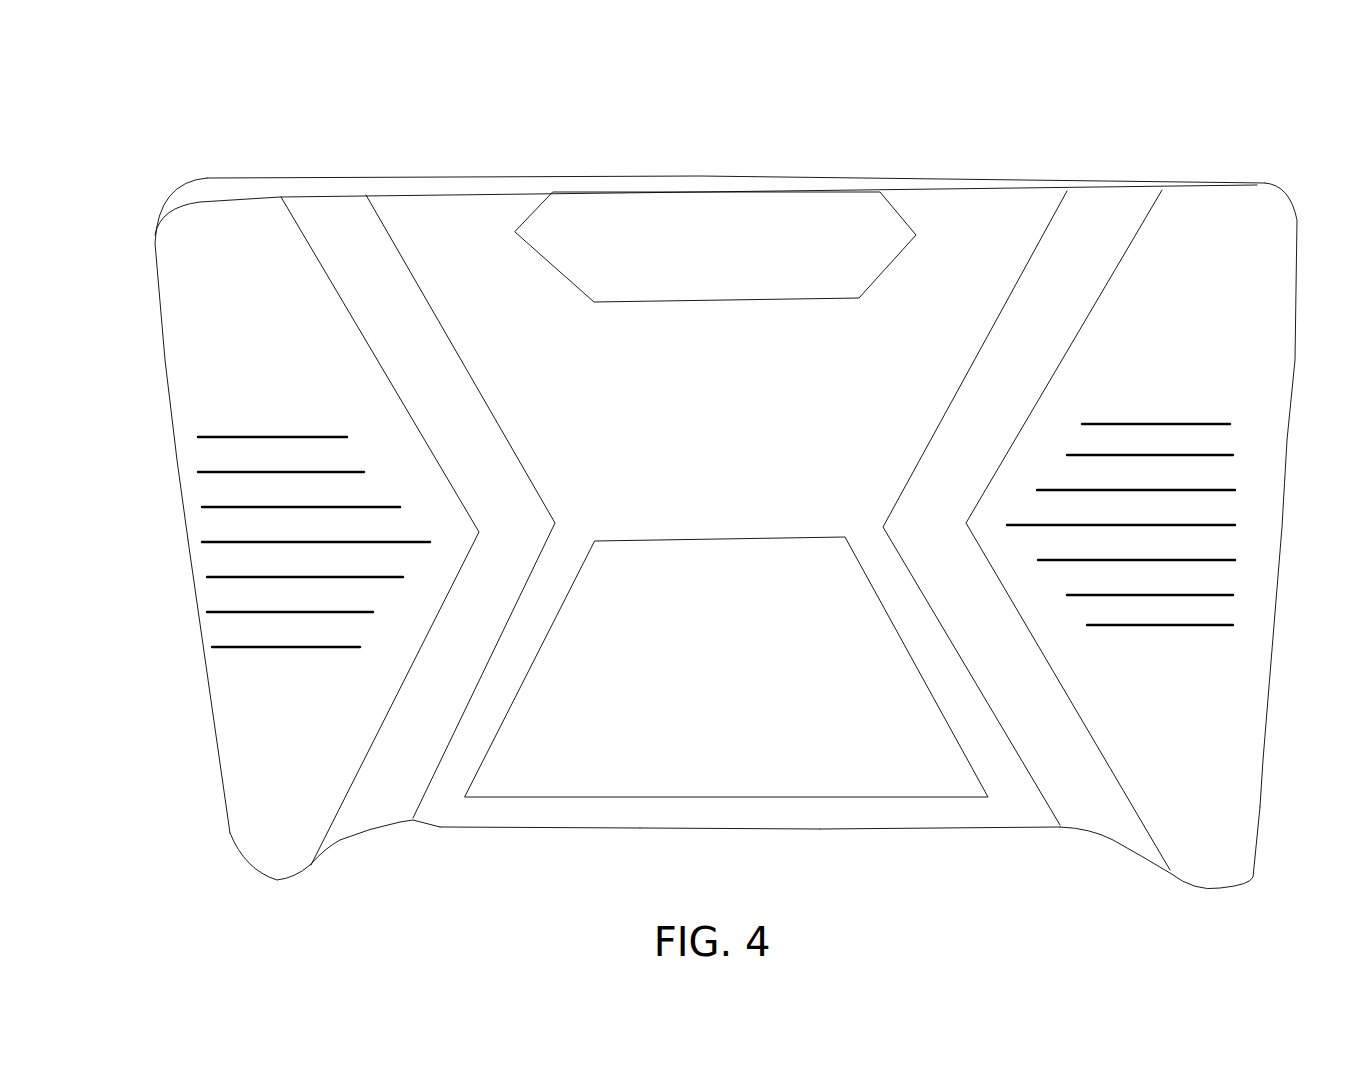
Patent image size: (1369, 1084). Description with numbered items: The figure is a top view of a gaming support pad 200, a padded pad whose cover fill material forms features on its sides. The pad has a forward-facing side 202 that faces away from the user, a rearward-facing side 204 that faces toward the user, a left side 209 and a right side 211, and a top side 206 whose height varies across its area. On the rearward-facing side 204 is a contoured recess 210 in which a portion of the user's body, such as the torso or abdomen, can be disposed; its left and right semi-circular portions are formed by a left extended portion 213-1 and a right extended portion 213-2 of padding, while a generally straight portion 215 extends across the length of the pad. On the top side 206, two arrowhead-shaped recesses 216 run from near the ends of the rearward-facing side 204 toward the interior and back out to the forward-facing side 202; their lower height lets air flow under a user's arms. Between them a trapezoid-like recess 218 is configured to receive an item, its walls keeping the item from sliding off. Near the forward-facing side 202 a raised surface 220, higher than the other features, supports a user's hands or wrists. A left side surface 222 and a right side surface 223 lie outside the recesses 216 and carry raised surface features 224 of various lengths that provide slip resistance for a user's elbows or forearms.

The gaming support pad 200 is at (1255, 88).
The forward-facing side 202 is at (333, 137).
The rearward-facing side 204 is at (889, 893).
The top side 206 is at (153, 265).
The left side 209 is at (113, 526).
The recess 210 is at (560, 881).
The right side 211 is at (1300, 537).
The left extended portion 213-1 is at (320, 886).
The right extended portion 213-2 is at (1128, 885).
The generally straight portion 215 is at (720, 843).
The recesses 216 is at (725, 530).
The recess 218 is at (726, 667).
The raised surface 220 is at (715, 247).
The left side surface 222 is at (272, 381).
The right side surface 223 is at (1156, 374).
The surface features 224 is at (207, 577).